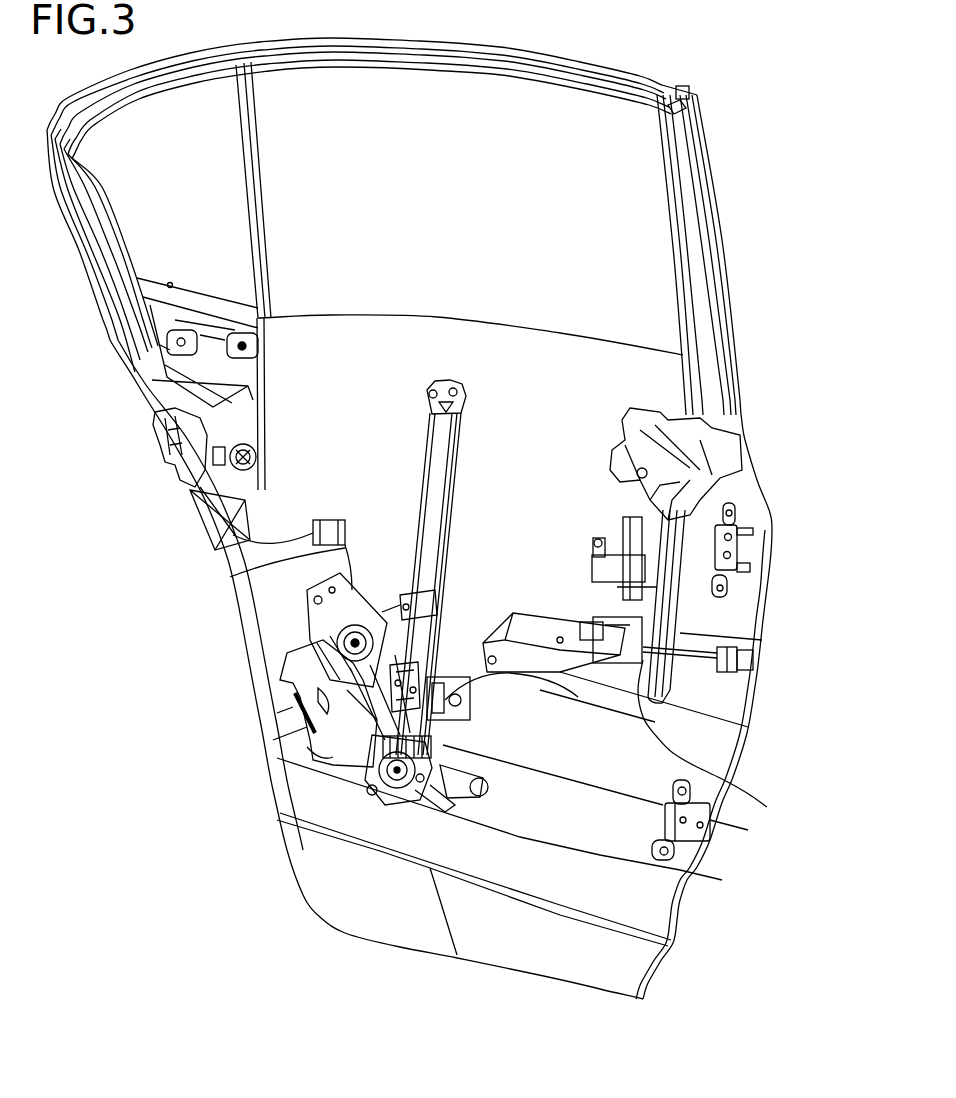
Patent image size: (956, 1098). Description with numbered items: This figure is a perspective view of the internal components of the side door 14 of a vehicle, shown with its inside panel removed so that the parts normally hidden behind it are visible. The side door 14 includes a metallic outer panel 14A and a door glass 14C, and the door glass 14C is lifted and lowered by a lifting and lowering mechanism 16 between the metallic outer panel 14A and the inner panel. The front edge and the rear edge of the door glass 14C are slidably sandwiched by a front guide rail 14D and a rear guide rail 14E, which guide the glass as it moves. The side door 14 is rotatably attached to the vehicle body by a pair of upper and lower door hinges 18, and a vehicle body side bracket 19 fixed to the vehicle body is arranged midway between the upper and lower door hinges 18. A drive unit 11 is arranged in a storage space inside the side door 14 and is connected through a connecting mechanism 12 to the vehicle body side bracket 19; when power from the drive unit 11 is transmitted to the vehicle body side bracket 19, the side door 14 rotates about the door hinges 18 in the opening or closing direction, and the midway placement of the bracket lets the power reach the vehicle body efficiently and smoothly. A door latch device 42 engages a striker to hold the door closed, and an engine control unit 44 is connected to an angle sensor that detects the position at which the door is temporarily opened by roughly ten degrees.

The side door 14 is at (700, 110).
The metallic outer panel 14A is at (618, 890).
The door glass 14C is at (587, 378).
The front guide rail 14D is at (675, 682).
The rear guide rail 14E is at (163, 410).
The connecting mechanism 12 is at (670, 678).
The lifting and lowering mechanism 16 is at (430, 548).
The door hinges 18 is at (745, 552).
The drive unit 11 is at (613, 598).
The vehicle body side bracket 19 is at (747, 665).
The door latch device 42 is at (200, 428).
The engine control unit (ECU) 44 is at (340, 722).